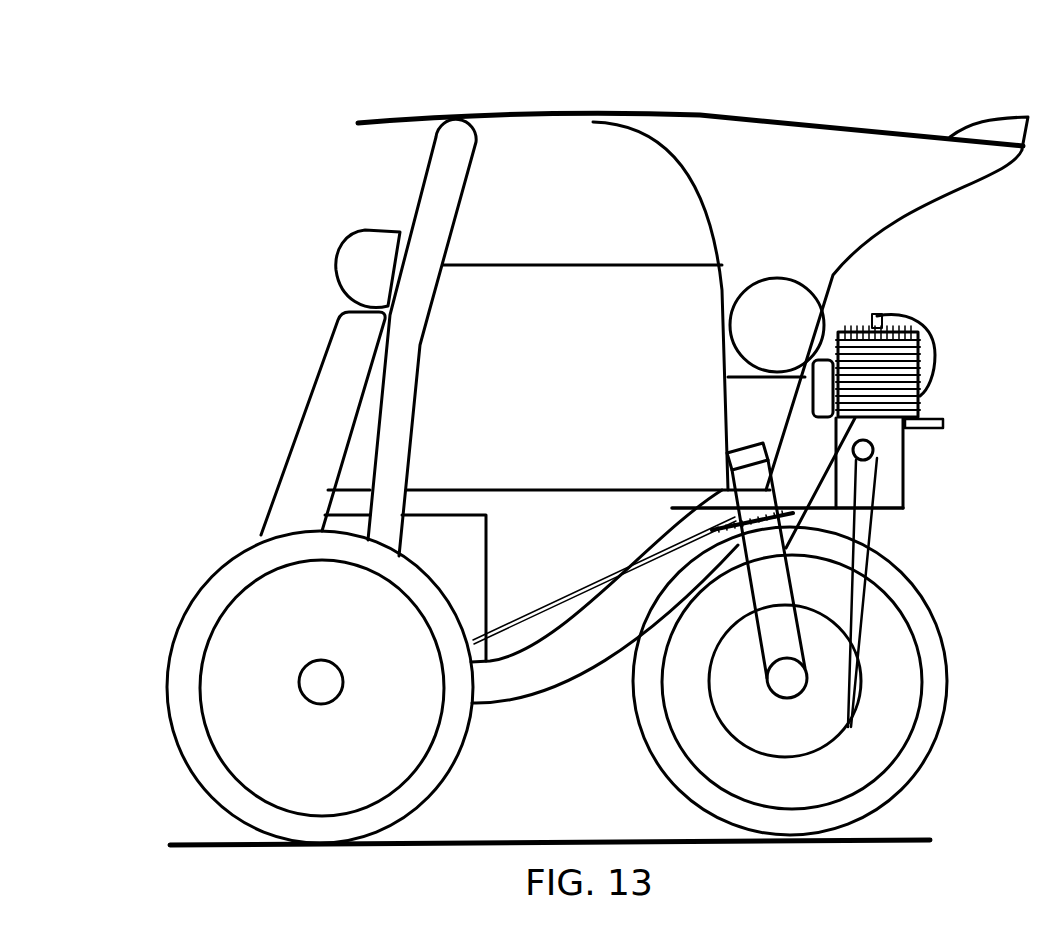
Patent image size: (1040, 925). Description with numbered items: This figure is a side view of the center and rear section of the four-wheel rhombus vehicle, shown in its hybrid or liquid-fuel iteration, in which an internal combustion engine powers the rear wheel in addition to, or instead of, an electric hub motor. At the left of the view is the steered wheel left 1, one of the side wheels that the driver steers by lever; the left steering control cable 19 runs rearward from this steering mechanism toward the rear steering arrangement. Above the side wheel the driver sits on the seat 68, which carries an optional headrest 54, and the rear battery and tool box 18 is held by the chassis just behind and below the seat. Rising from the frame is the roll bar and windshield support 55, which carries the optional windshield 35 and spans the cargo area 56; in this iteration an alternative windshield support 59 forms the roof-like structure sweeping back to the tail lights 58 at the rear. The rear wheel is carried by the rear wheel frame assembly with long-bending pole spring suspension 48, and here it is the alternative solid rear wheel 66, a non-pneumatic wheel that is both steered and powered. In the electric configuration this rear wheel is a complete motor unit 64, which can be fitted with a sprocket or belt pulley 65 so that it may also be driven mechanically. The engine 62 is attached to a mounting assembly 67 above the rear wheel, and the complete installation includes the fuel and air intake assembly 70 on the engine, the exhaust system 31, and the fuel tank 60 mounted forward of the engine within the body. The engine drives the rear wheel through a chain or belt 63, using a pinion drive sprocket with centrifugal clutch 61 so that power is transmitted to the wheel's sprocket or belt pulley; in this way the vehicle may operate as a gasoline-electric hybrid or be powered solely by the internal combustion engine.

The steered wheel left 1 is at (203, 603).
The rear battery and tool box 18 is at (467, 542).
The left steering control cable 19 is at (527, 618).
The exhaust system 31 is at (930, 417).
The windshield 35 is at (415, 115).
The rear wheel frame assembly with long-bending pole spring suspension 48 is at (558, 670).
The headrest 54 is at (348, 258).
The roll bar and windshield support 55 is at (464, 118).
The cargo area 56 is at (538, 283).
The tail lights 58 is at (983, 133).
The alternative windshield support 59 is at (832, 147).
The fuel tank 60 is at (730, 320).
The pinion drive sprocket with centrifugal clutch 61 is at (877, 447).
The engine 62 is at (903, 497).
The chain or belt 63 is at (912, 532).
The complete motor unit 64 is at (892, 635).
The sprocket or belt pulley 65 is at (848, 718).
The solid rear wheel 66 is at (682, 786).
The mounting assembly 67 is at (682, 503).
The seat 68 is at (327, 407).
The fuel and air intake assembly 70 is at (840, 318).